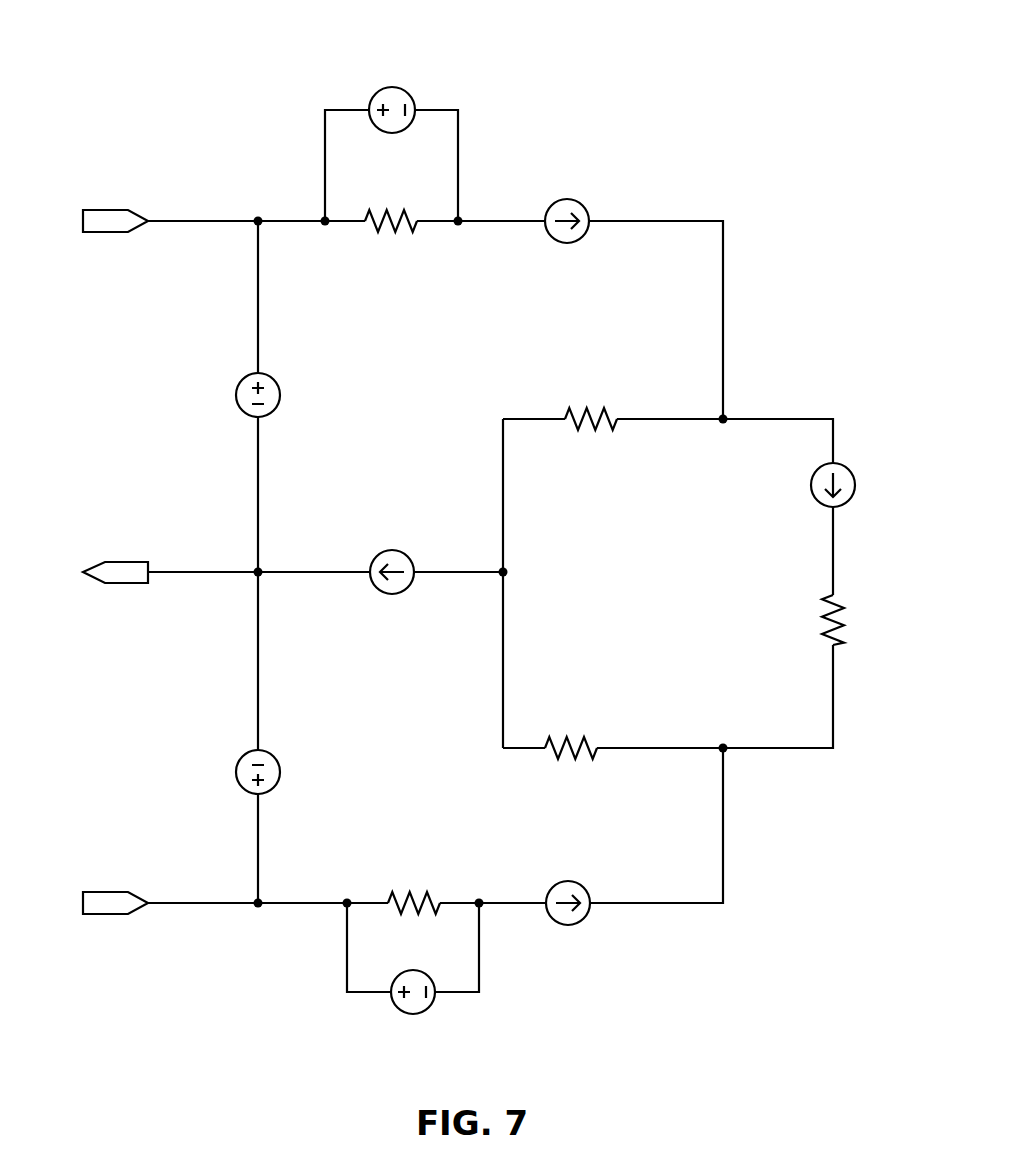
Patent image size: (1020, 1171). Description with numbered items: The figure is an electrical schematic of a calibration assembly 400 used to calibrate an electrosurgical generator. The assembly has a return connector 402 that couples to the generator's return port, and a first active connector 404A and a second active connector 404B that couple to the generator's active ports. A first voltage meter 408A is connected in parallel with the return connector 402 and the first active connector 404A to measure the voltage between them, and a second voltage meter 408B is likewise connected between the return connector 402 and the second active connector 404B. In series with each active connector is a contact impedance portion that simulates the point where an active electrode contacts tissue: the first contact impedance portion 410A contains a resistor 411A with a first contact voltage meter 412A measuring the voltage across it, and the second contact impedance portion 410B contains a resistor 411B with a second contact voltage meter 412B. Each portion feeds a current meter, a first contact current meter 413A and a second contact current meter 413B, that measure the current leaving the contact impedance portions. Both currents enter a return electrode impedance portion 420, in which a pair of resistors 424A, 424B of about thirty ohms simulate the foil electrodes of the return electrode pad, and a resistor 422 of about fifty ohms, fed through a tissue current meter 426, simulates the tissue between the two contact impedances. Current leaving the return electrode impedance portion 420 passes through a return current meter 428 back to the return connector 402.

The calibration assembly 400 is at (134, 33).
The return connector 402 is at (105, 560).
The first active connector 404A is at (108, 210).
The second active connector 404B is at (108, 892).
The first voltage meter 408A is at (242, 380).
The second voltage meter 408B is at (243, 757).
The first contact impedance portion 410A is at (272, 68).
The second contact impedance portion 410B is at (329, 1017).
The resistor 411A is at (417, 223).
The resistor 411B is at (390, 898).
The first contact voltage meter 412A is at (376, 94).
The second contact voltage meter 412B is at (436, 1000).
The first contact current meter 413A is at (586, 210).
The second contact current meter 413B is at (590, 917).
The return electrode impedance portion 420 is at (690, 598).
The resistor 422 is at (828, 647).
The resistor 424A is at (568, 413).
The resistor 424B is at (588, 743).
The tissue current meter 426 is at (845, 466).
The return current meter 428 is at (373, 560).